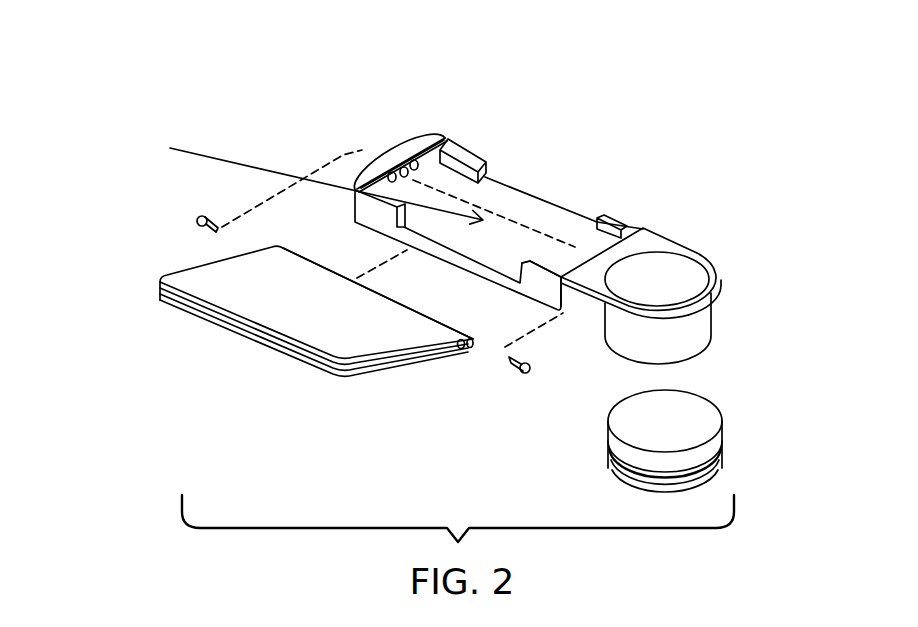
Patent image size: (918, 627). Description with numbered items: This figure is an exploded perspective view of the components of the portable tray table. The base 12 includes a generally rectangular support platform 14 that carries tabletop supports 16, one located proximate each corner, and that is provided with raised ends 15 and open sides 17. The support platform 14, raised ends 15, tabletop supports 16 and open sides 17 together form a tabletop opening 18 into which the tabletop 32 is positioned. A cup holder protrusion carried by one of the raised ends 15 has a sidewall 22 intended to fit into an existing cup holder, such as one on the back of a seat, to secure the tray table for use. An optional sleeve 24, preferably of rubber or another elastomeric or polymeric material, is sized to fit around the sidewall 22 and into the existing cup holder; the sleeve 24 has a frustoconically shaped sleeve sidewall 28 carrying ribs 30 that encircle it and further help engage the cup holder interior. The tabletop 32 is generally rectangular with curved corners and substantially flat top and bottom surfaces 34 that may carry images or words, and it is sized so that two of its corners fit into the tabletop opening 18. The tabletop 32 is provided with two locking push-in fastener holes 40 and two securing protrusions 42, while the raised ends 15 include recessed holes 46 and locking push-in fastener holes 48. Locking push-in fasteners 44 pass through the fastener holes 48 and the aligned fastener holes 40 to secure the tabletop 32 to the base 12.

The base 12 is at (579, 201).
The support platform 14 is at (570, 230).
The raised ends 15 is at (428, 156).
The tabletop supports 16 is at (480, 151).
The open sides 17 is at (498, 267).
The tabletop opening 18 is at (308, 174).
The sidewall 22 is at (697, 328).
The sleeve 24 is at (725, 388).
The sleeve sidewall 28 is at (713, 438).
The ribs 30 is at (708, 478).
The tabletop 32 is at (205, 338).
The top and bottom surfaces 34 is at (332, 310).
The locking push-in fastener holes 40 is at (470, 350).
The securing protrusions 42 is at (460, 350).
The locking push-in fasteners 44 is at (197, 220).
The recessed holes 46 is at (388, 172).
The locking push-in fastener holes 48 is at (402, 166).